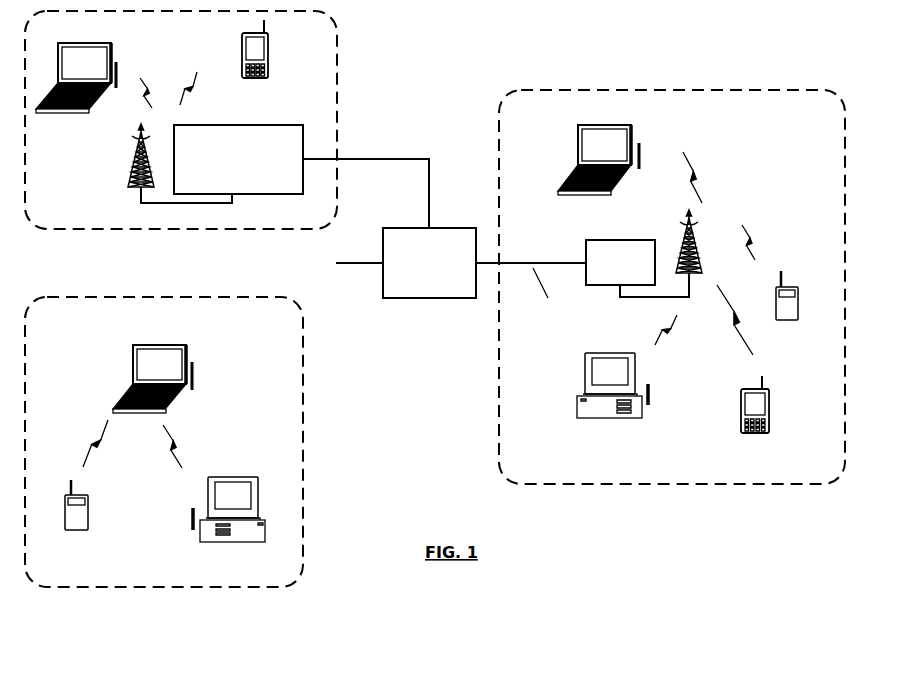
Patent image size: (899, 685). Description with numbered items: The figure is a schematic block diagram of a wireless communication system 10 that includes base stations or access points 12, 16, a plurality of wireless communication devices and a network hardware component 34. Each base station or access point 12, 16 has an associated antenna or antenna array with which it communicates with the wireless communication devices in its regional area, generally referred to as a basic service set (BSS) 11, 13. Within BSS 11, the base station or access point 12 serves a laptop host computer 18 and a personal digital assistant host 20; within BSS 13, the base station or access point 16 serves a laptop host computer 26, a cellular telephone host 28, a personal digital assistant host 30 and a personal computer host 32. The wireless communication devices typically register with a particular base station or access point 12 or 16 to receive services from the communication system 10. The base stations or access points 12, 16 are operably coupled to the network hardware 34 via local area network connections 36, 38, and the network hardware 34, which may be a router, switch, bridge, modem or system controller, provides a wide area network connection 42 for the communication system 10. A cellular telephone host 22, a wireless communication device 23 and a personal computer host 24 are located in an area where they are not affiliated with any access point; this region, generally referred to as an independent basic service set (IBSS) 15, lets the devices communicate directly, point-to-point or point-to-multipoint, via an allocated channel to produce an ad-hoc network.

The communication system 10 is at (602, 517).
The basic service set 11 is at (337, 42).
The base station or access point 12 is at (203, 125).
The basic service set 13 is at (683, 90).
The independent basic service set 15 is at (117, 297).
The base station or access point 16 is at (620, 240).
The laptop host computer 18 is at (48, 110).
The personal digital assistant host 20 is at (247, 78).
The cellular telephone host 22 is at (75, 530).
The wireless communication device 23 is at (133, 360).
The personal computer host 24 is at (224, 542).
The laptop host computer 26 is at (578, 143).
The cellular telephone host 28 is at (782, 320).
The personal digital assistant host 30 is at (745, 433).
The personal computer host 32 is at (590, 418).
The network hardware 34 is at (413, 228).
The local area network connection 36 is at (398, 159).
The local area network connection 38 is at (557, 263).
The wide area network connection 42 is at (366, 263).